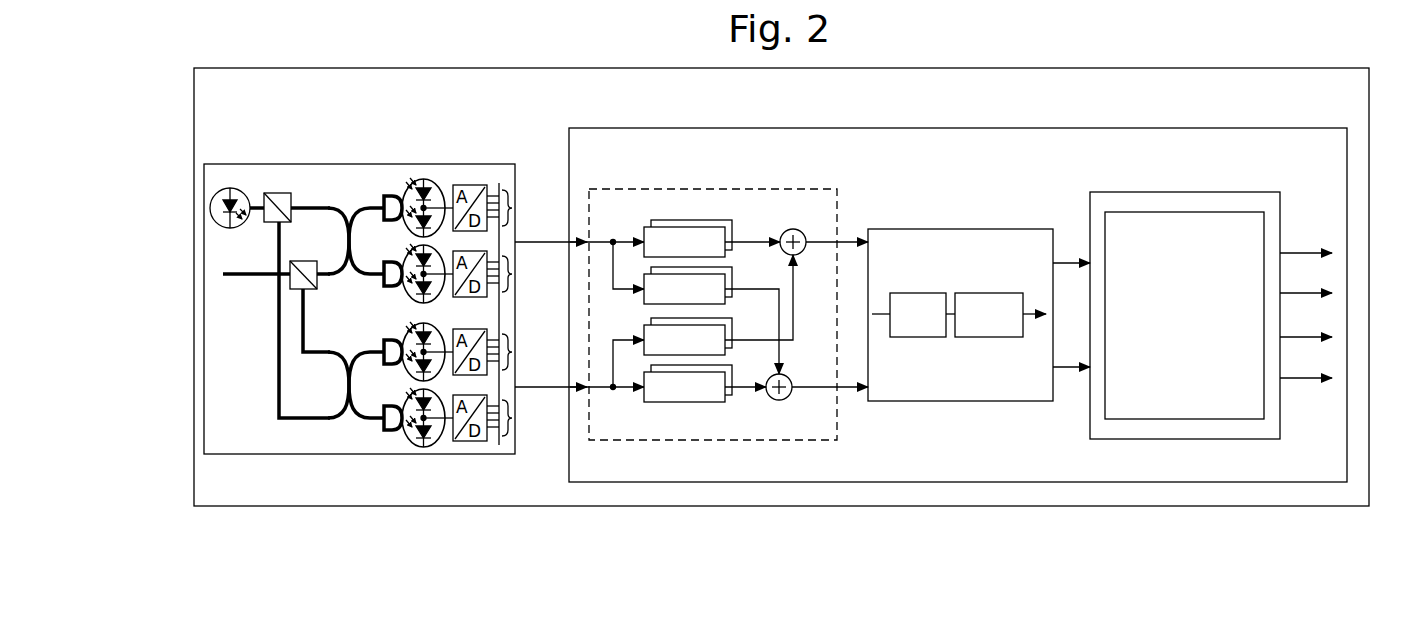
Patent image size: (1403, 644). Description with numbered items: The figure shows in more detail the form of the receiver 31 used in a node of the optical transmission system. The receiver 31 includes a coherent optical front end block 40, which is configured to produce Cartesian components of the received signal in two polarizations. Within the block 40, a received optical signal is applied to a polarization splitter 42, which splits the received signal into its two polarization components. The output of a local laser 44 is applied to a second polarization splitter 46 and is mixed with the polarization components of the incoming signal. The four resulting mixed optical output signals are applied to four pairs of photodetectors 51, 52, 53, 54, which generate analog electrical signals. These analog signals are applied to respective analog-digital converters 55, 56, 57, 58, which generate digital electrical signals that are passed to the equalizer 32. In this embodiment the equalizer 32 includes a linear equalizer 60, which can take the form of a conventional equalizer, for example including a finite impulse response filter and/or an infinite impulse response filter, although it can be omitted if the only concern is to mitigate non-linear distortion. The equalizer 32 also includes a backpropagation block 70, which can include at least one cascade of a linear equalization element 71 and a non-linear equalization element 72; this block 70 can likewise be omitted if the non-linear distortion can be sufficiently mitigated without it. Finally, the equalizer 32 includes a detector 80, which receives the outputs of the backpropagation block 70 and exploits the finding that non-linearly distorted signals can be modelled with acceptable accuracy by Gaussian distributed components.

The receiver 31 is at (1314, 78).
The equalizer 32 is at (1210, 148).
The coherent optical front end block 40 is at (340, 174).
The polarization splitter 42 is at (310, 262).
The local laser 44 is at (244, 192).
The second polarization splitter 46 is at (281, 196).
The pair of photodetectors 51 is at (414, 184).
The pair of photodetectors 52 is at (408, 297).
The pair of photodetectors 53 is at (410, 375).
The pair of photodetectors 54 is at (420, 447).
The analog-digital converter 55 is at (472, 186).
The analog-digital converter 56 is at (473, 250).
The analog-digital converter 57 is at (473, 329).
The analog-digital converter 58 is at (465, 442).
The linear equalizer 60 is at (806, 190).
The backpropagation block 70 is at (979, 282).
The linear equalization element 71 is at (917, 294).
The non-linear equalization element 72 is at (991, 294).
The detector 80 is at (1153, 191).